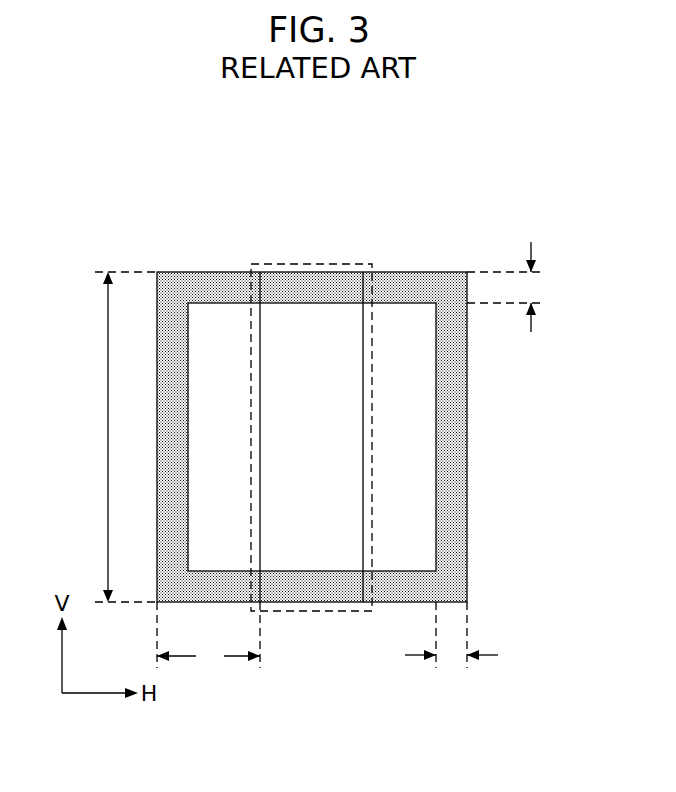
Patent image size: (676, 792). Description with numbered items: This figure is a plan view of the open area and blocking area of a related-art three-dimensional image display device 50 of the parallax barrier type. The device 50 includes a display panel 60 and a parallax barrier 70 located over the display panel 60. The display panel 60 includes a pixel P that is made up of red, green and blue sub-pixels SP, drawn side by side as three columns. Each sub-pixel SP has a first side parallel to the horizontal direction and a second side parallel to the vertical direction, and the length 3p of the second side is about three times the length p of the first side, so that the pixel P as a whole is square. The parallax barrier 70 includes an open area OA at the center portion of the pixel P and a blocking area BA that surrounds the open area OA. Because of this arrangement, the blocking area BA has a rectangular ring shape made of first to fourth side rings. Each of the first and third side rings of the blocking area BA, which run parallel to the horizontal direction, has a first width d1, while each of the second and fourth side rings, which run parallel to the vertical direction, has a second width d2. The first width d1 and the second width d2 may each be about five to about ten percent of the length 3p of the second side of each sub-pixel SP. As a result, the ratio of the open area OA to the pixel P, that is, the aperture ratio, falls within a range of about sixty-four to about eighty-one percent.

The three-dimensional image display device 50 is at (375, 349).
The display panel 60 is at (284, 358).
The parallax barrier 70 is at (375, 388).
The pixel P is at (202, 272).
The sub-pixel SP is at (335, 207).
The blocking area BA is at (410, 272).
The open area OA is at (418, 398).
The first width d1 is at (529, 287).
The second width d2 is at (451, 655).
The length of the first side p is at (208, 656).
The length of the second side 3p is at (94, 437).